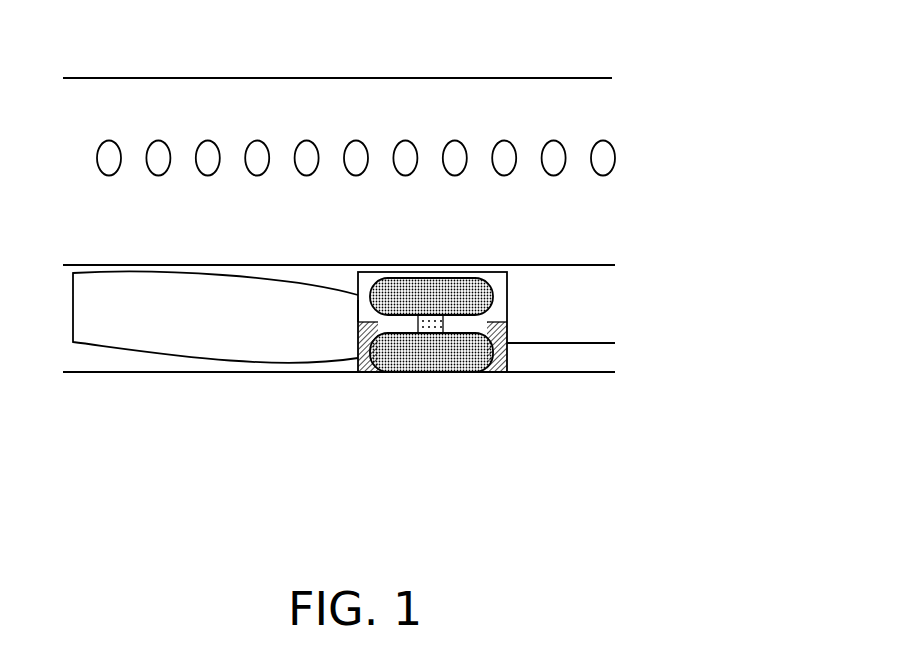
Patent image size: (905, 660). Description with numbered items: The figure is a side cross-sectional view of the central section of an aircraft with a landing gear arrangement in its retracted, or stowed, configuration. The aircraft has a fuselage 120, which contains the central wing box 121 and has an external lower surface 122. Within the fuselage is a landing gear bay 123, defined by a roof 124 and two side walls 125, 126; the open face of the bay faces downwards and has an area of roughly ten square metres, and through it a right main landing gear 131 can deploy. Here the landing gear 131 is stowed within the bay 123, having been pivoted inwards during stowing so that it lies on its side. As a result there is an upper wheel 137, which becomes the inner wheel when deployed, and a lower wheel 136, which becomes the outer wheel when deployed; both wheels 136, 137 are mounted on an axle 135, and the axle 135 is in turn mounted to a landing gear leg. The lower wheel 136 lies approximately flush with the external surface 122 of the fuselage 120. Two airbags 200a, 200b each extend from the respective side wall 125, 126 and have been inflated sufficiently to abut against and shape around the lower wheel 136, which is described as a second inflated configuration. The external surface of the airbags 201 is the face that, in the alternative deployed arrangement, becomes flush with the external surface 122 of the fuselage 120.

The fuselage 120 is at (430, 85).
The central wing box 121 is at (112, 322).
The external lower surface 122 is at (177, 372).
The landing gear bay 123 is at (493, 285).
The roof 124 is at (433, 272).
The side wall 125 is at (353, 315).
The side wall 126 is at (615, 343).
The landing gear 131 is at (425, 412).
The axle 135 is at (443, 326).
The lower wheel 136 is at (383, 360).
The upper wheel 137 is at (372, 297).
The airbag 200a is at (370, 357).
The airbag 200b is at (503, 350).
The external surface of the airbags 201 is at (488, 372).